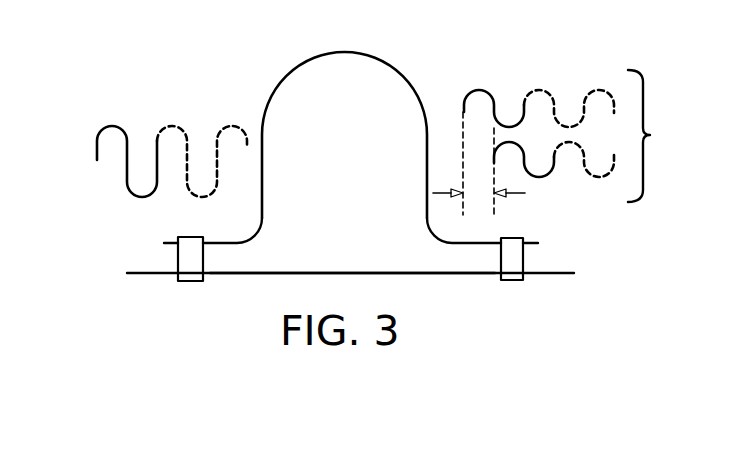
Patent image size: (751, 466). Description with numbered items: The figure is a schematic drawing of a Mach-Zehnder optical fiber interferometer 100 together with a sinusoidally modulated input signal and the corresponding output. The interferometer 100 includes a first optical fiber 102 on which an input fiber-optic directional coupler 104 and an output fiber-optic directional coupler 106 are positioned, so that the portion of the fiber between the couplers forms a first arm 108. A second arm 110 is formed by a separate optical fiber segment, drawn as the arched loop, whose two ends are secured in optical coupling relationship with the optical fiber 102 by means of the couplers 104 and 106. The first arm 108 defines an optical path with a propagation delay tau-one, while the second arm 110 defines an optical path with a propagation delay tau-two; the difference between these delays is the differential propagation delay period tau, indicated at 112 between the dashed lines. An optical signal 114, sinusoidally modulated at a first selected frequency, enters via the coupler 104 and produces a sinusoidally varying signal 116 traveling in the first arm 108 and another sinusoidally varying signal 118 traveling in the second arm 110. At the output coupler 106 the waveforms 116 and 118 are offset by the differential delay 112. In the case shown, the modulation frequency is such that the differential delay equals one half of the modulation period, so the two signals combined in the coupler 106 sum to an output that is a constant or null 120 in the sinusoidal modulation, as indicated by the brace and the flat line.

The interferometer 100 is at (280, 58).
The first optical fiber 102 is at (150, 273).
The input fiber-optic directional coupler 104 is at (183, 281).
The output fiber-optic directional coupler 106 is at (510, 281).
The first arm 108 is at (285, 272).
The second arm 110 is at (392, 62).
The differential propagation delay period 112 is at (508, 213).
The sinusoidally modulated optical input signal 114 is at (113, 124).
The sinusoidally varying optical signal in first arm 116 is at (479, 89).
The sinusoidally varying signal in second arm 118 is at (506, 143).
The null in sinusoidal modulation 120 is at (733, 135).